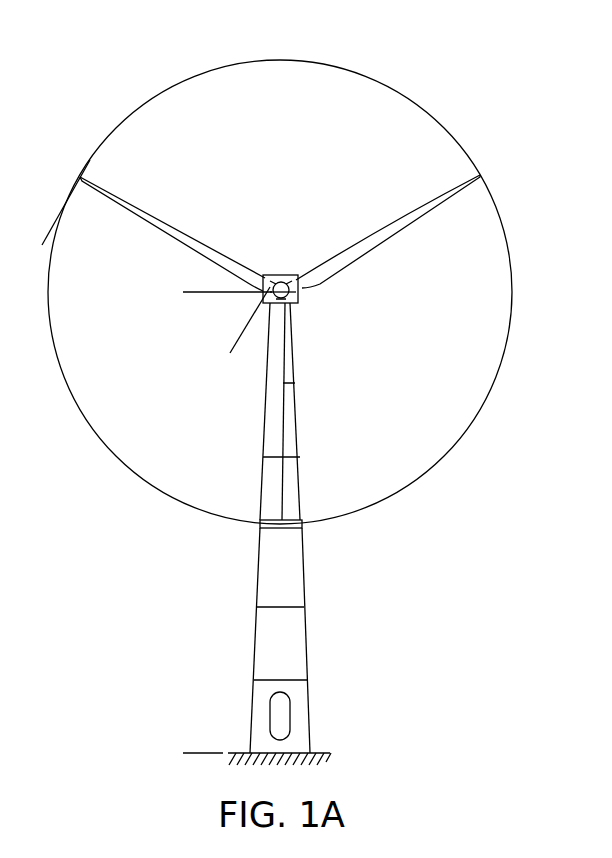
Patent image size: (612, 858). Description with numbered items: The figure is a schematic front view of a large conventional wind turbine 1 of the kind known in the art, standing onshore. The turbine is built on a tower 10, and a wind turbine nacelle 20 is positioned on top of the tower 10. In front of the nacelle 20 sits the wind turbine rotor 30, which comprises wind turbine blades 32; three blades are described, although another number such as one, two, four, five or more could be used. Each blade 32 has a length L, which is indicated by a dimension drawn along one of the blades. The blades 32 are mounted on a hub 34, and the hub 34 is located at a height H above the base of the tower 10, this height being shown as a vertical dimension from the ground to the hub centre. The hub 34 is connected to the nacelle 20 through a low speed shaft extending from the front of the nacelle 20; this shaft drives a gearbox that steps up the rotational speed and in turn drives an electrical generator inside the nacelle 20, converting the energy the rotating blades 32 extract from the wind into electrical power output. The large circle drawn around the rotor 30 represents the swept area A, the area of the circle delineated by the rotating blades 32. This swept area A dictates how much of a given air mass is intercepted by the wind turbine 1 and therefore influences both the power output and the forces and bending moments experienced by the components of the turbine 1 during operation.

The wind turbine 1 is at (433, 77).
The tower 10 is at (303, 563).
The wind turbine nacelle 20 is at (299, 297).
The wind turbine rotor 30 is at (97, 174).
The wind turbine blade 32 is at (407, 228).
The hub 34 is at (283, 277).
The swept area A is at (455, 442).
The hub height H is at (193, 292).
The blade length L is at (233, 343).